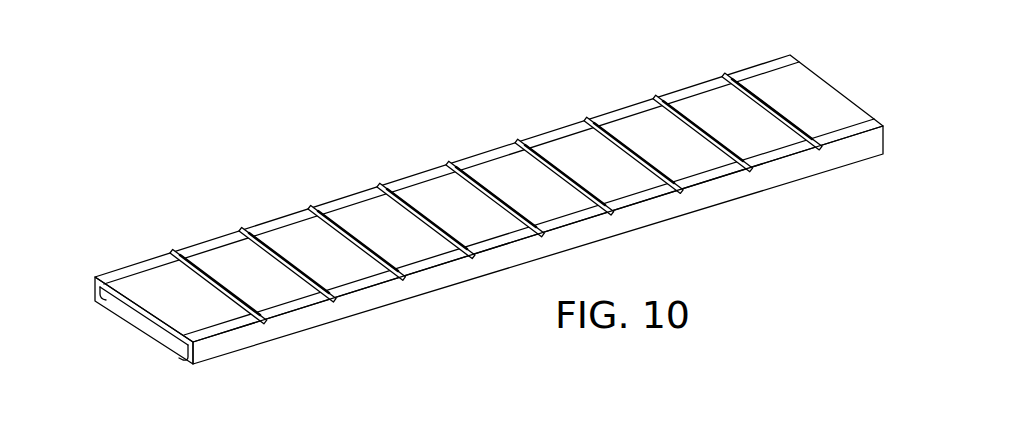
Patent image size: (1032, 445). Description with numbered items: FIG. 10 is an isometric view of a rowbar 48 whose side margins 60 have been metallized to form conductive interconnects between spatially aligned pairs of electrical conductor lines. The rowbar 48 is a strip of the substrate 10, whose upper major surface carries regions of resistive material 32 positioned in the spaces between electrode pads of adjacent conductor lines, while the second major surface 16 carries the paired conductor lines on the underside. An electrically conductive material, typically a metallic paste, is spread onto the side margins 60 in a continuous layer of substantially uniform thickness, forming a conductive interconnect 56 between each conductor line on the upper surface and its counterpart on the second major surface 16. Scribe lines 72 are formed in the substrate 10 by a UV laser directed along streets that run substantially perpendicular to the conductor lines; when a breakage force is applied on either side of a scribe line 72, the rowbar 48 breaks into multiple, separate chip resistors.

The substrate 10 is at (840, 88).
The second major surface 16 is at (140, 332).
The resistive material 32 is at (337, 265).
The rowbar 48 is at (481, 118).
The conductive interconnect 56 is at (93, 283).
The side margin 60 is at (107, 291).
The scribe line 72 is at (168, 252).